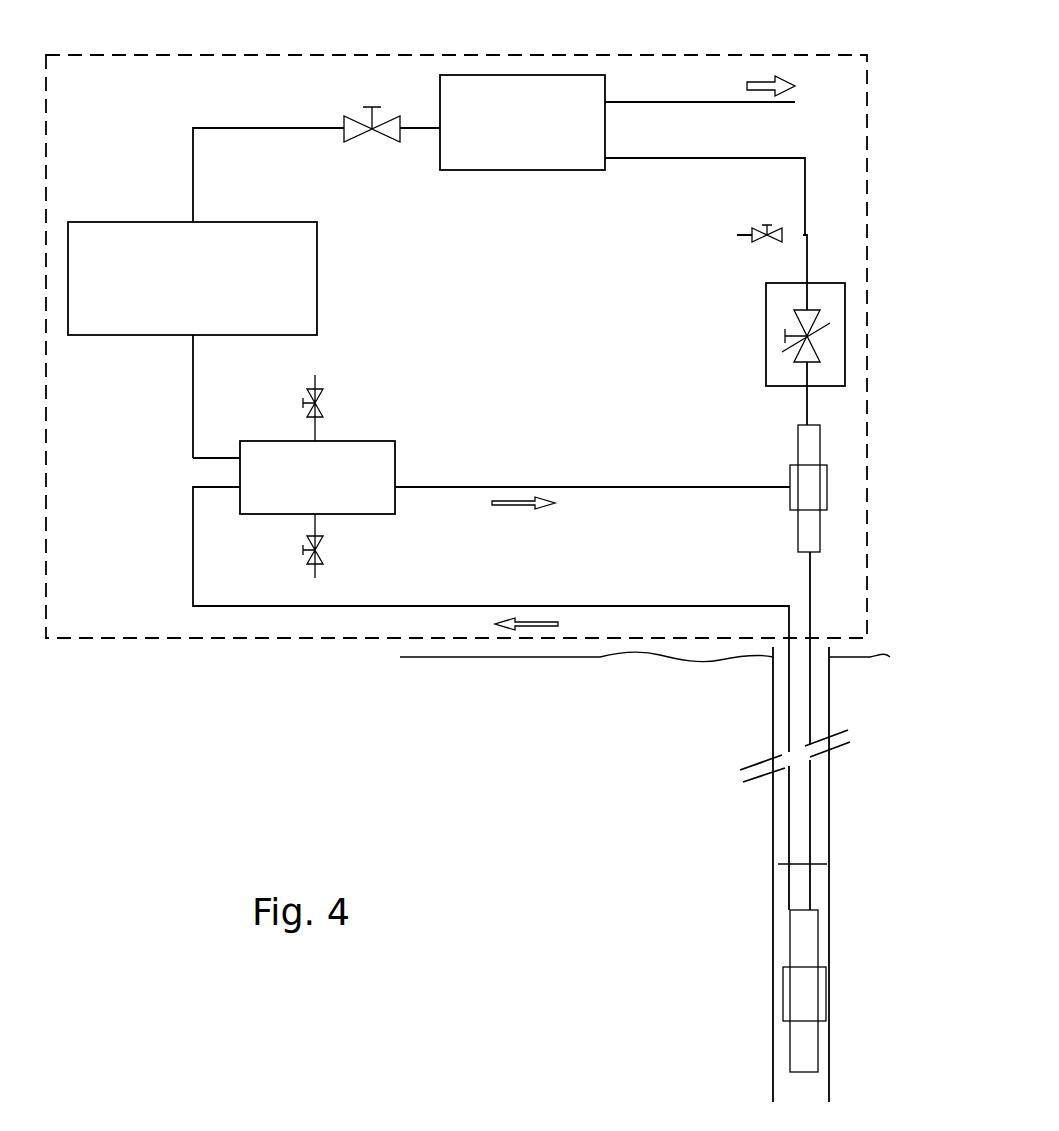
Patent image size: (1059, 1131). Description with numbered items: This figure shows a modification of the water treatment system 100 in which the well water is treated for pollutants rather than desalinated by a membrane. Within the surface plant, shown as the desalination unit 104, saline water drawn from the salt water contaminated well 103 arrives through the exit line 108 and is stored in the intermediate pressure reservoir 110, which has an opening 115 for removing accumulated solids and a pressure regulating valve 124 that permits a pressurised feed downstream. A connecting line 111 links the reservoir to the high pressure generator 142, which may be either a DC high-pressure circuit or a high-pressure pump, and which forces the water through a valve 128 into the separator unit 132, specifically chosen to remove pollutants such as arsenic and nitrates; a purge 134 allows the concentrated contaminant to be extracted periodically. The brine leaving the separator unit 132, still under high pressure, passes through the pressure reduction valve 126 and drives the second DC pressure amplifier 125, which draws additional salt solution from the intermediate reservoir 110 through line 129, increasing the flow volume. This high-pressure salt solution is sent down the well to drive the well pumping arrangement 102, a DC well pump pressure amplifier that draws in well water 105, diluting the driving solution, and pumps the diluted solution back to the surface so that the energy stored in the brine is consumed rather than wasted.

The water treatment system 100 is at (292, 770).
The well pumping arrangement 102 is at (783, 993).
The salt water contaminated well 103 is at (773, 697).
The desalination unit 104 is at (387, 56).
The well water 105 is at (780, 878).
The exit line 108 is at (447, 607).
The intermediate pressure reservoir 110 is at (360, 514).
The connecting line 111 is at (193, 430).
The opening 115 is at (315, 566).
The pressure regulating valve 124 is at (313, 405).
The second DC pressure amplifier 125 is at (790, 509).
The pressure reduction valve 126 is at (817, 283).
The valve 128 is at (393, 118).
The line 129 is at (653, 488).
The separator unit 132 is at (535, 75).
The purge 134 is at (764, 229).
The high pressure generator 142 is at (175, 275).